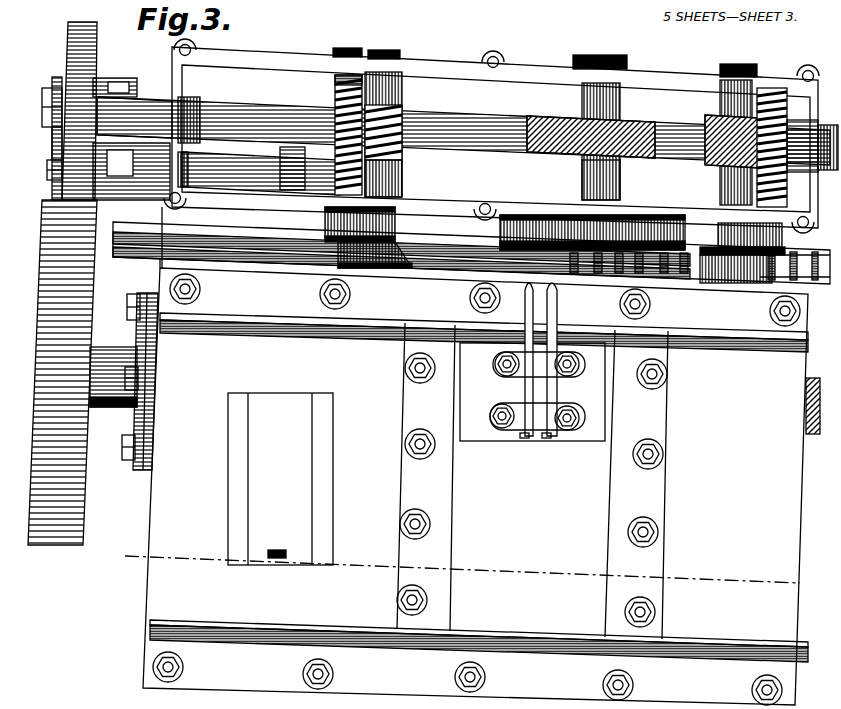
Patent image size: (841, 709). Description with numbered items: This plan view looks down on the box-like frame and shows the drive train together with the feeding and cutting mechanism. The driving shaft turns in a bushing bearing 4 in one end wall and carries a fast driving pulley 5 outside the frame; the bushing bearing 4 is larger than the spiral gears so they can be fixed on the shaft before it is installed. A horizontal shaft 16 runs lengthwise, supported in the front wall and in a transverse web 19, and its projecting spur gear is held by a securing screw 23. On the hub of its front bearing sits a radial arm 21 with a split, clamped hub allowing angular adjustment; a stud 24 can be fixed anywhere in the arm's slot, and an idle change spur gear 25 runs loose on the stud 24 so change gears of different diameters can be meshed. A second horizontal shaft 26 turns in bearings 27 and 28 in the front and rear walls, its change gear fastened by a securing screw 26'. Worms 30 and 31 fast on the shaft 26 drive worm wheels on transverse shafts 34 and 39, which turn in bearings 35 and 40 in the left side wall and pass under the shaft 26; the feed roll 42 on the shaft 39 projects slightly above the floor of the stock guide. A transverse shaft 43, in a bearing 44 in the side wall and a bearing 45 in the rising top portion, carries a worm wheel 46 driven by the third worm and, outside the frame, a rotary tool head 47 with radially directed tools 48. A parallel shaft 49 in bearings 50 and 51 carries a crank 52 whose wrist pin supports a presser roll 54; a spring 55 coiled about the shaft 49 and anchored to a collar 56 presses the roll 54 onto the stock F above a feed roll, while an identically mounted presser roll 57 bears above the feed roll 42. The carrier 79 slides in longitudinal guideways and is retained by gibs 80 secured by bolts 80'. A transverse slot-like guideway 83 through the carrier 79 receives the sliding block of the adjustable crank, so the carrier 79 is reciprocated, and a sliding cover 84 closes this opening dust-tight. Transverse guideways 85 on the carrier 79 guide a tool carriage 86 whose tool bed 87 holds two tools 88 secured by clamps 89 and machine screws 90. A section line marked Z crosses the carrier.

The bushing bearing 4 is at (138, 462).
The fast driving pulley 5 is at (62, 372).
The horizontal shaft 16 is at (240, 161).
The transverse web 19 is at (290, 106).
The radial arm 21 is at (116, 96).
The securing screw 23 is at (54, 180).
The stud 24 is at (50, 88).
The idle change spur gear 25 is at (97, 44).
The horizontal shaft 26 is at (463, 128).
The securing screw 26' is at (48, 143).
The bearing 27 is at (143, 106).
The bearing 28 is at (817, 164).
The worm 30 is at (402, 82).
The worm 31 is at (717, 116).
The horizontal shaft 34 is at (393, 186).
The bearing 35 is at (396, 56).
The horizontal shaft 39 is at (720, 188).
The bearing 40 is at (728, 68).
The feed roll 42 is at (594, 244).
The horizontal shaft 43 is at (583, 104).
The bearing 44 is at (585, 66).
The bearing 45 is at (622, 194).
The worm wheel 46 is at (562, 153).
The rotary tool head 47 is at (664, 280).
The radially directed tools 48 is at (490, 234).
The horizontal shaft 49 is at (342, 82).
The bearing 50 is at (348, 42).
The bearing 51 is at (333, 187).
The crank 52 is at (340, 232).
The presser roll 54 is at (400, 268).
The spring 55 is at (312, 164).
The collar 56 is at (342, 98).
The presser roll 57 is at (720, 272).
The carrier 79 is at (707, 526).
The gibs 80 is at (467, 489).
The bolts 80' is at (627, 494).
The guideway 83 is at (325, 558).
The sliding cover 84 is at (280, 479).
The transverse guideways 85 is at (532, 481).
The tool carriage 86 is at (508, 546).
The tool bed 87 is at (578, 441).
The tools 88 is at (556, 316).
The clamps 89 is at (566, 372).
The machine screws 90 is at (503, 371).
The stock F is at (113, 280).
The section line Z is at (459, 571).